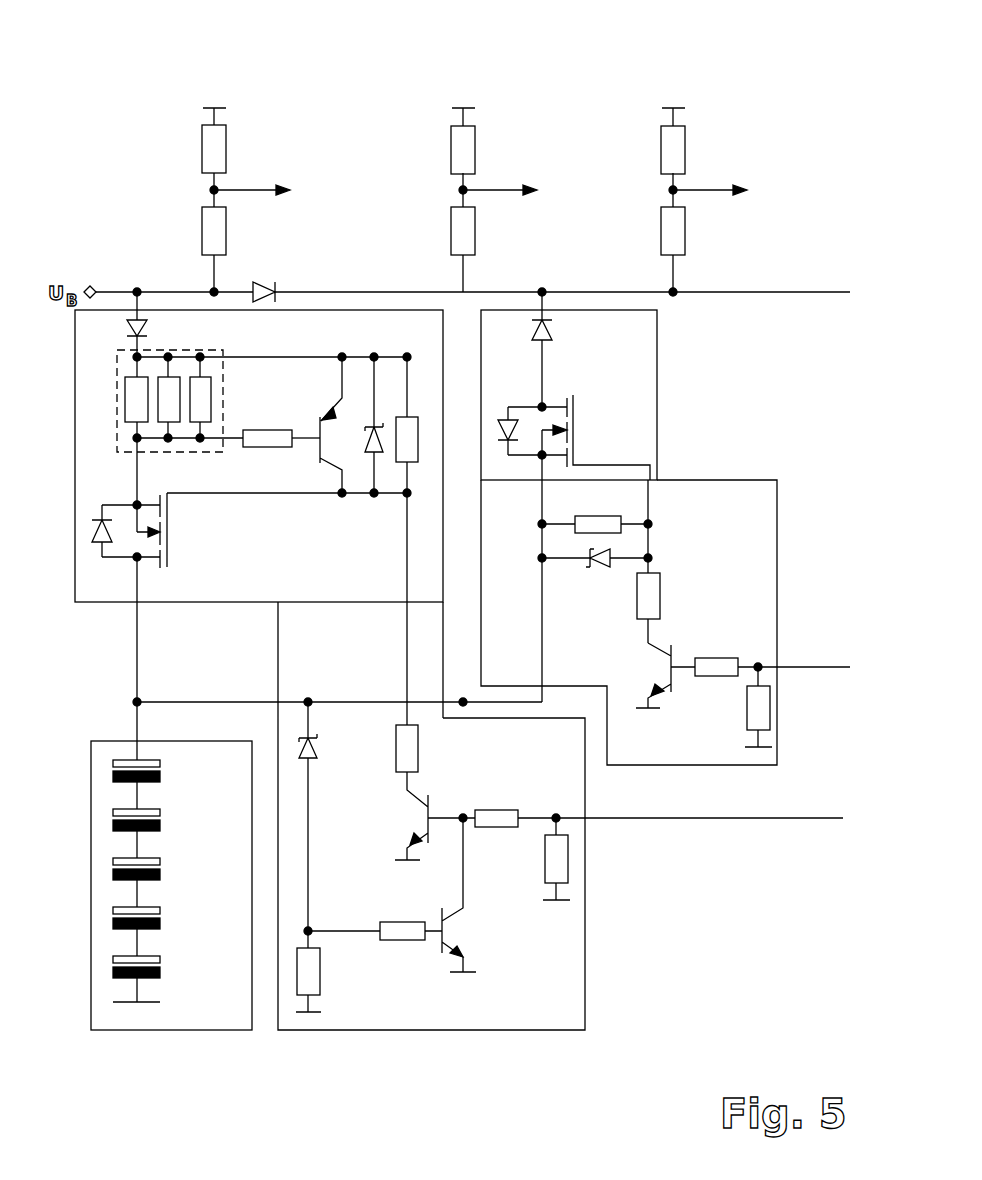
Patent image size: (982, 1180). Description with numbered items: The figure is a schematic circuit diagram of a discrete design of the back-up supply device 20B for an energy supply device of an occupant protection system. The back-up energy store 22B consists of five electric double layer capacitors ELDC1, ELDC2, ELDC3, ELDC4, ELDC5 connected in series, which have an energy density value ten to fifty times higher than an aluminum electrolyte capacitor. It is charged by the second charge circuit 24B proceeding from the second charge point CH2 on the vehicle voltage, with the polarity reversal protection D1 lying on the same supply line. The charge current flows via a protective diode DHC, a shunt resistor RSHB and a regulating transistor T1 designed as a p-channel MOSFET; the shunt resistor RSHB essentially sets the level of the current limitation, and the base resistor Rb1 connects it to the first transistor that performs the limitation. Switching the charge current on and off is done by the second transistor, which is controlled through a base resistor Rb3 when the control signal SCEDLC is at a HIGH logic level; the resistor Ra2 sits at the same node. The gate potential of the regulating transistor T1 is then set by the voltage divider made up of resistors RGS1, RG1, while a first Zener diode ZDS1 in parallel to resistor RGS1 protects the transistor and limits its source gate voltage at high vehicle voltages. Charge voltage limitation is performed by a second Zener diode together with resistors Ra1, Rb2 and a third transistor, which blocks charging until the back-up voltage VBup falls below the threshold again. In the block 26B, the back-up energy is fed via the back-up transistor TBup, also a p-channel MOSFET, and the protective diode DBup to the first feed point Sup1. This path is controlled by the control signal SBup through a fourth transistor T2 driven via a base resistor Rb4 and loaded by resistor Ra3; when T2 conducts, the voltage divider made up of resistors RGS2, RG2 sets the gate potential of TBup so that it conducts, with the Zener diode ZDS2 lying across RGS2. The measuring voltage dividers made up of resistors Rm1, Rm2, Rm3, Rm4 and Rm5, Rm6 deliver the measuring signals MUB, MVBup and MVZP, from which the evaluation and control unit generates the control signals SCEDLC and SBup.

The back-up supply device 20B is at (775, 92).
The back-up energy store 22B is at (203, 1033).
The second charge circuit 24B is at (225, 605).
The discharging / supply switch circuit 26B is at (657, 352).
The second charge point CH2 is at (137, 275).
The first feed point Sup1 is at (546, 278).
The polarity reversal protection D1 is at (259, 279).
The resistor Rm1 is at (186, 241).
The resistor Rm2 is at (186, 149).
The resistor Rm3 is at (435, 241).
The resistor Rm4 is at (435, 149).
The resistor Rm5 is at (645, 241).
The resistor Rm6 is at (645, 149).
The measuring signal MUB is at (250, 178).
The measuring signal MVBup is at (503, 178).
The measuring signal MVZP is at (712, 178).
The protective diode DHC is at (163, 330).
The shunt resistor RSHB is at (262, 401).
The base resistor Rb1 is at (281, 426).
The first Zener diode ZDS1 is at (368, 460).
The resistor RGS1 is at (410, 412).
The regulating transistor T1 is at (148, 530).
The back-up voltage VBup is at (300, 703).
The electric double layer capacitor ELDC1 is at (175, 784).
The electric double layer capacitor ELDC2 is at (175, 833).
The electric double layer capacitor ELDC3 is at (175, 882).
The electric double layer capacitor ELDC4 is at (175, 931).
The electric double layer capacitor ELDC5 is at (175, 979).
The resistor RG1 is at (432, 748).
The base resistor Rb3 is at (653, 804).
The resistor Ra2 is at (533, 859).
The resistor Rb2 is at (366, 948).
The resistor Ra1 is at (330, 971).
The control signal SCEDLC is at (788, 803).
The protective diode DBup is at (574, 349).
The back-up transistor TBup is at (574, 437).
The resistor RGS2 is at (595, 510).
The zener diode ZDS2 is at (595, 574).
The resistor RG2 is at (673, 561).
The fourth transistor T2 is at (658, 675).
The base resistor Rb4 is at (771, 653).
The control signal SBup is at (814, 648).
The resistor Ra3 is at (734, 707).